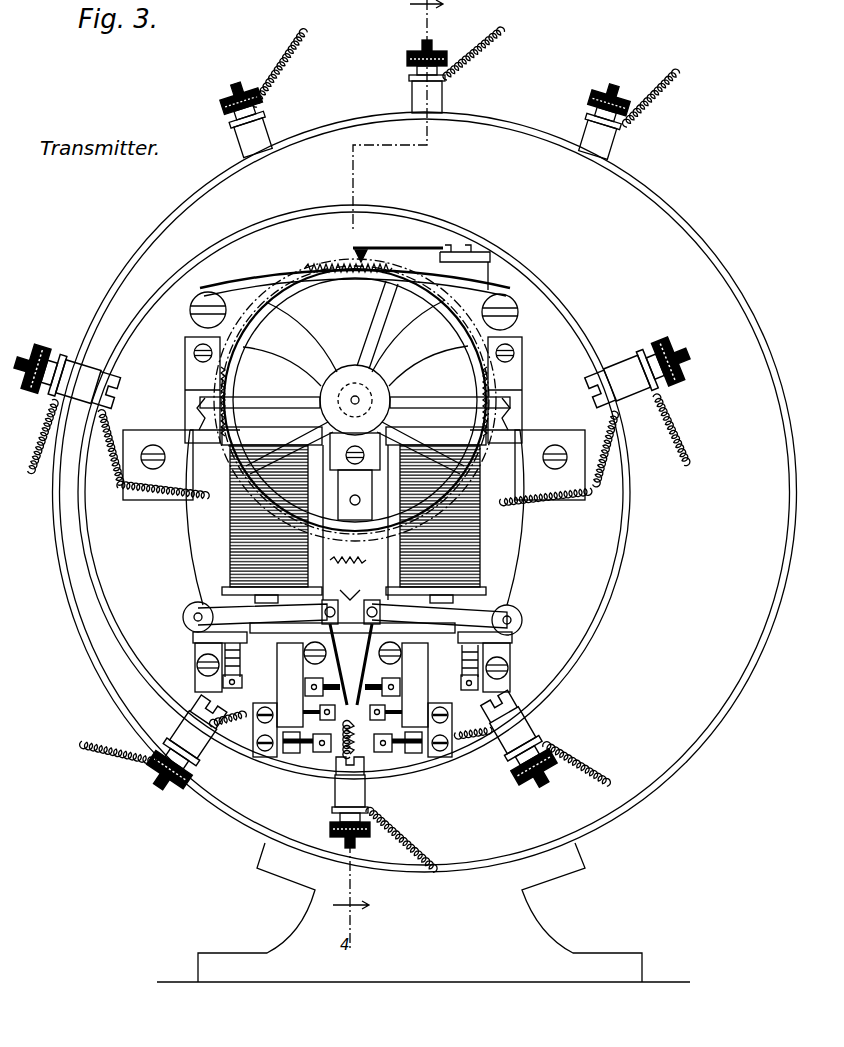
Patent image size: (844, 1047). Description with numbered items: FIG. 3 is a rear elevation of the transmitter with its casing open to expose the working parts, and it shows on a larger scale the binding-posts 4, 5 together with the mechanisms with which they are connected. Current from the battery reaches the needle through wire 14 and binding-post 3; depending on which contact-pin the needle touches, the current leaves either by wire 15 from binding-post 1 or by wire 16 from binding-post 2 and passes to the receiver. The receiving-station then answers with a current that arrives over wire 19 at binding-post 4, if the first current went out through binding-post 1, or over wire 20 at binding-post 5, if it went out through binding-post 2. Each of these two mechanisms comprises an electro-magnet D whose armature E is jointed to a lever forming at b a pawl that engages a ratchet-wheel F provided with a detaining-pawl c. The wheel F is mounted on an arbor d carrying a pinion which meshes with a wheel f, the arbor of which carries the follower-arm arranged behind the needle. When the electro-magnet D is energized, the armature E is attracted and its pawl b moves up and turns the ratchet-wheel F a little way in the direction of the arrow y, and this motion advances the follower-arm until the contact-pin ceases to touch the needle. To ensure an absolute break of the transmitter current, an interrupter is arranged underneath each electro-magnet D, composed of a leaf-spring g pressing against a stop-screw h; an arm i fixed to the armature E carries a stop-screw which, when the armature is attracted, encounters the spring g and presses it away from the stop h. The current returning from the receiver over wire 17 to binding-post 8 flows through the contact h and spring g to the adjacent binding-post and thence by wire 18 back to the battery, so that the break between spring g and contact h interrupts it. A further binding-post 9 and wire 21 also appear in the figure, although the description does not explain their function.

The binding-post 1 is at (246, 107).
The binding-post 2 is at (604, 110).
The binding-post 3 is at (417, 76).
The binding-post 4 is at (641, 369).
The binding-post 5 is at (65, 374).
The binding-post 8 is at (351, 744).
The binding post 9 is at (350, 802).
The wire 14 is at (505, 32).
The wire 15 is at (306, 34).
The wire 16 is at (680, 72).
The wire 17 is at (85, 742).
The wire 18 is at (613, 790).
The wire 19 is at (683, 465).
The wire 20 is at (28, 471).
The wire 21 is at (432, 872).
The ratchet-wheel F is at (355, 400).
The arbor d is at (360, 398).
The pawl b is at (200, 410).
The detaining-pawl c is at (421, 259).
The arrow y is at (301, 257).
The electro-magnet D is at (350, 515).
The wheel f is at (348, 578).
The armature E is at (352, 617).
The leaf-spring g is at (352, 685).
The arm i is at (350, 667).
The stop-screw h is at (352, 751).